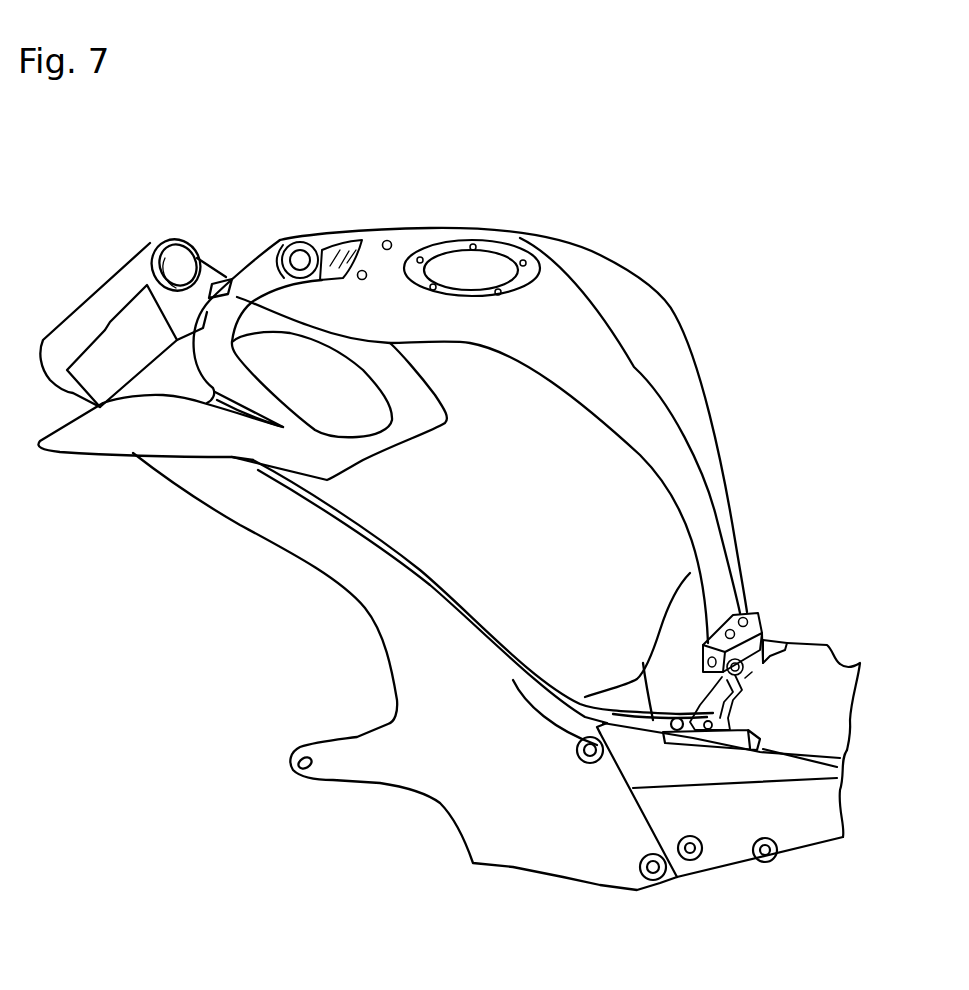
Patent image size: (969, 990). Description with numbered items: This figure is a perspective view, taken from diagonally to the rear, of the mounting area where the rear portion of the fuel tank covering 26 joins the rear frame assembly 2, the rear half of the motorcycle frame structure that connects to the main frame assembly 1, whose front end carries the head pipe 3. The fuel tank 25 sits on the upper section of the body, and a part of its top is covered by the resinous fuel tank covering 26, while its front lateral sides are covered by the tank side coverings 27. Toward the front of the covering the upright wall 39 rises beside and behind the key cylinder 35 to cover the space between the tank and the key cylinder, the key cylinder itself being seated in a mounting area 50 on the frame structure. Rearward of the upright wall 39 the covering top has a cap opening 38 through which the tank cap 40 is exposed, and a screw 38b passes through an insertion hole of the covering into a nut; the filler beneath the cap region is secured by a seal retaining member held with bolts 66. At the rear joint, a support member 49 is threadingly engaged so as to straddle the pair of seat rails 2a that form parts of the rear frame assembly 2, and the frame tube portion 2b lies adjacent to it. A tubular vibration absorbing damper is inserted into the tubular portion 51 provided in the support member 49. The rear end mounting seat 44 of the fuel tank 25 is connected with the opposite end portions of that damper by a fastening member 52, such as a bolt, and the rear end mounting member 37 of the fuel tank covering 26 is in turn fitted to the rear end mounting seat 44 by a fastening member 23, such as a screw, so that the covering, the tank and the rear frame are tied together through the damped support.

The main frame assembly 1 is at (247, 523).
The rear frame assembly 2 is at (803, 853).
The seat rail 2a is at (718, 850).
The bracket tube portion 2b is at (820, 692).
The head pipe 3 is at (113, 292).
The fastening member 23 is at (743, 612).
The fuel tank 25 is at (663, 323).
The fuel tank covering 26 is at (623, 397).
The tank side covering 27 is at (283, 377).
The key cylinder 35 is at (300, 258).
The rear end mounting member 37 is at (752, 620).
The cap opening 38 is at (441, 247).
The screw 38b is at (391, 243).
The upright wall 39 is at (349, 247).
The tank cap 40 is at (497, 260).
The rear end mounting seat 44 is at (752, 668).
The support member 49 is at (710, 727).
The mounting area 50 is at (763, 634).
The tubular portion 51 is at (790, 655).
The fastening member 52 is at (752, 665).
The bolt 66 is at (473, 247).